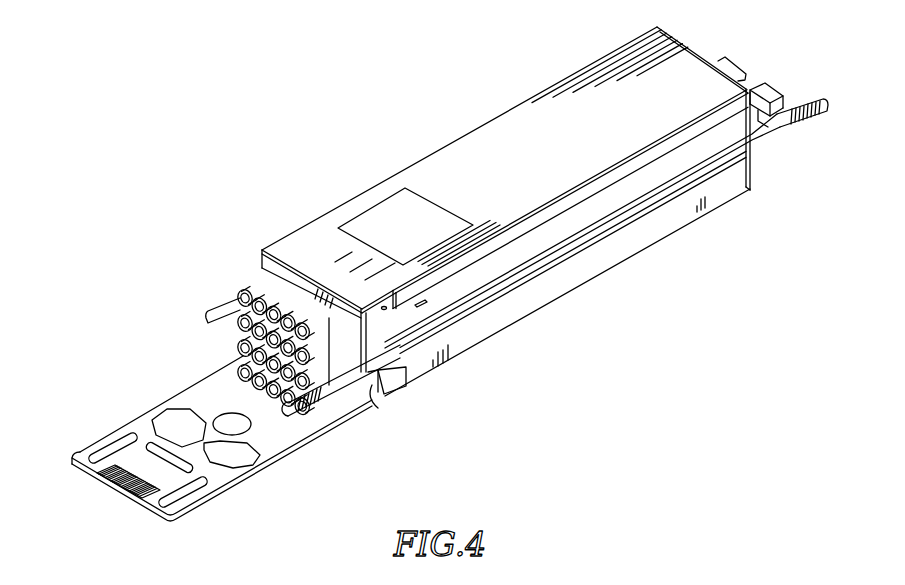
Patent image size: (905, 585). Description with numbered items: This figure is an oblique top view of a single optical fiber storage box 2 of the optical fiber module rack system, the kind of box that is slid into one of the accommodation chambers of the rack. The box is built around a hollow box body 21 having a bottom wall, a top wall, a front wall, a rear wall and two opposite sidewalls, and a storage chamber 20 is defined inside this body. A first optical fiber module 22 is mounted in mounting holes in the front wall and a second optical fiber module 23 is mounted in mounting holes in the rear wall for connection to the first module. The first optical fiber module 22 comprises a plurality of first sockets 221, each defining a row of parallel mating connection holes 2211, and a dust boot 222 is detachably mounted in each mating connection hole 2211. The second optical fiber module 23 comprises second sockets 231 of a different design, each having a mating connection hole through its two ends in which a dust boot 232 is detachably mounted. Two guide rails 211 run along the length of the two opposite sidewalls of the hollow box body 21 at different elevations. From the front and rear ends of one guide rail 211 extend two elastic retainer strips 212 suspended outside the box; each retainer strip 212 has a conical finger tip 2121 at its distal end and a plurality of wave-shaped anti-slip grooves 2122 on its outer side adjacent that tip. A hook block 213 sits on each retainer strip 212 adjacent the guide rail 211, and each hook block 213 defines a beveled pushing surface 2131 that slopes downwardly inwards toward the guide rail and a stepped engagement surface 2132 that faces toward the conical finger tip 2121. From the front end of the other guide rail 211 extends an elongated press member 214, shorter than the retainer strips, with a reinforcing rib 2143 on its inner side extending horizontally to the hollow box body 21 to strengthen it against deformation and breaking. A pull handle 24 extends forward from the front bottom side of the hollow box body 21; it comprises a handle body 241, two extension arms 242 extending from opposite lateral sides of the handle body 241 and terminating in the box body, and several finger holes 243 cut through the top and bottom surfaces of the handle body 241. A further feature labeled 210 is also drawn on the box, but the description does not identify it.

The optical fiber storage box 2 is at (451, 100).
The storage chamber 20 is at (427, 163).
The hollow box body 21 is at (499, 264).
The guide rail 211 is at (573, 250).
The elastic retainer strip 212 is at (324, 423).
The conical finger tip 2121 is at (283, 423).
The wave-shaped anti-slip grooves 2122 is at (306, 417).
The hook block 213 is at (410, 419).
The beveled pushing surface 2131 is at (372, 388).
The stepped engagement surface 2132 is at (366, 398).
The first optical fiber module 22 is at (273, 303).
The top plate 210 is at (271, 254).
The first socket 221 is at (297, 290).
The mating connection hole 2211 is at (243, 325).
The dust boot 222 is at (242, 351).
The elongated press member 214 is at (230, 316).
The reinforcing rib 2143 is at (238, 304).
The second optical fiber module 23 is at (606, 186).
The second socket 231 is at (767, 90).
The dust boot 232 is at (773, 104).
The pull handle 24 is at (198, 445).
The handle body 241 is at (110, 438).
The extension arm 242 is at (217, 378).
The finger hole 243 is at (213, 448).